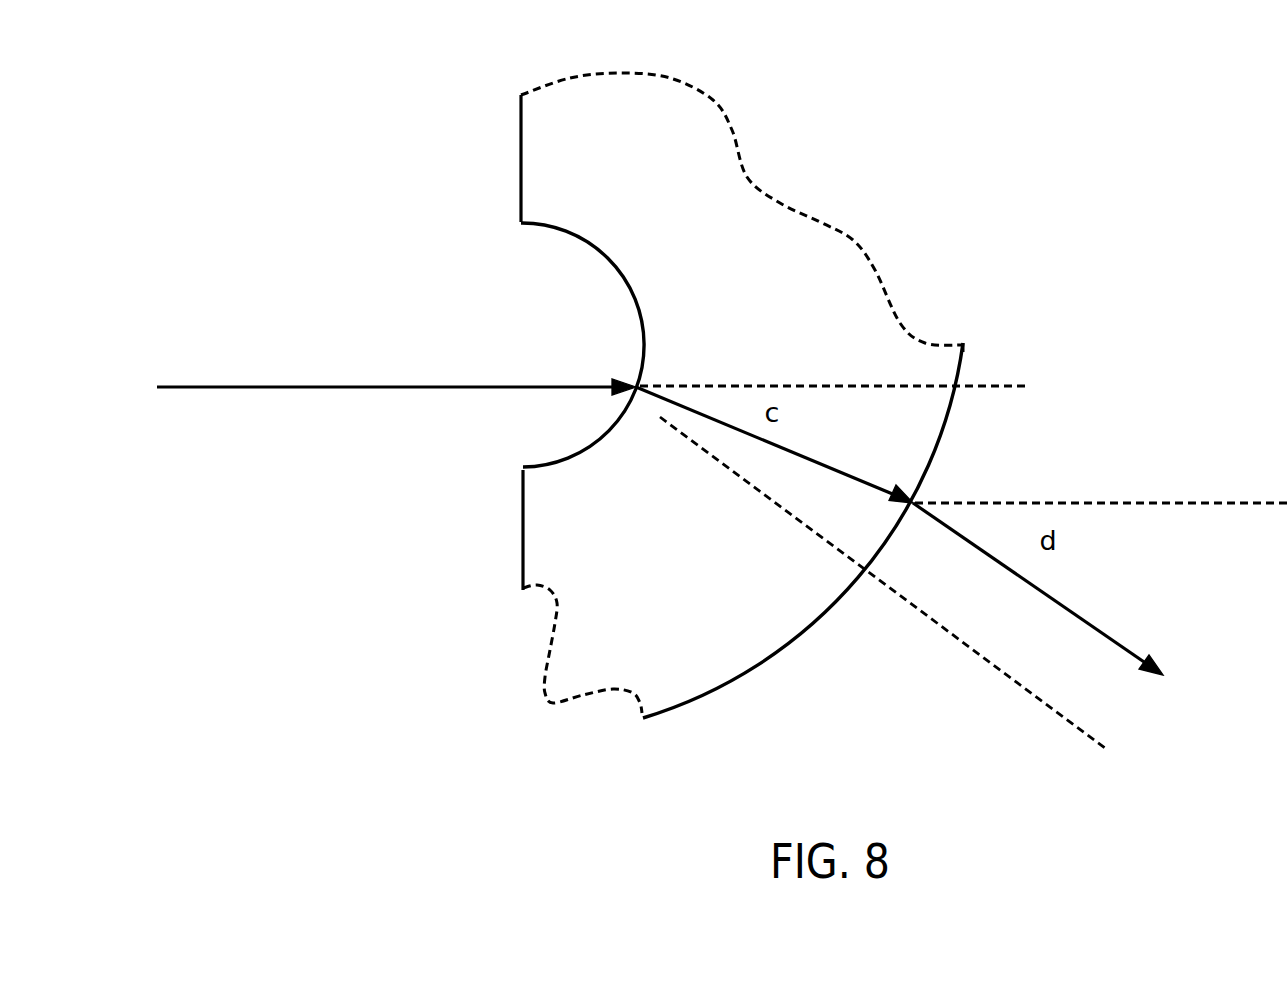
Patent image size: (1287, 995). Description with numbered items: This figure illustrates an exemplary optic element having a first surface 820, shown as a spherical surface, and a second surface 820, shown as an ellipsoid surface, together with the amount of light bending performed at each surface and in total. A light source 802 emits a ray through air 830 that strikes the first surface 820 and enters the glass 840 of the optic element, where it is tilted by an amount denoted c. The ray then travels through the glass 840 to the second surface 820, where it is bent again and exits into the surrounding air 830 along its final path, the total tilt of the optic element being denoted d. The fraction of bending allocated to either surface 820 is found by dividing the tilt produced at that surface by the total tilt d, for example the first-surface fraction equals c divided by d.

The light source 802 is at (334, 386).
The surface (first spherical surface / second ellipsoid surface) 820 is at (1120, 348).
The air 830 is at (913, 215).
The glass 840 is at (630, 223).